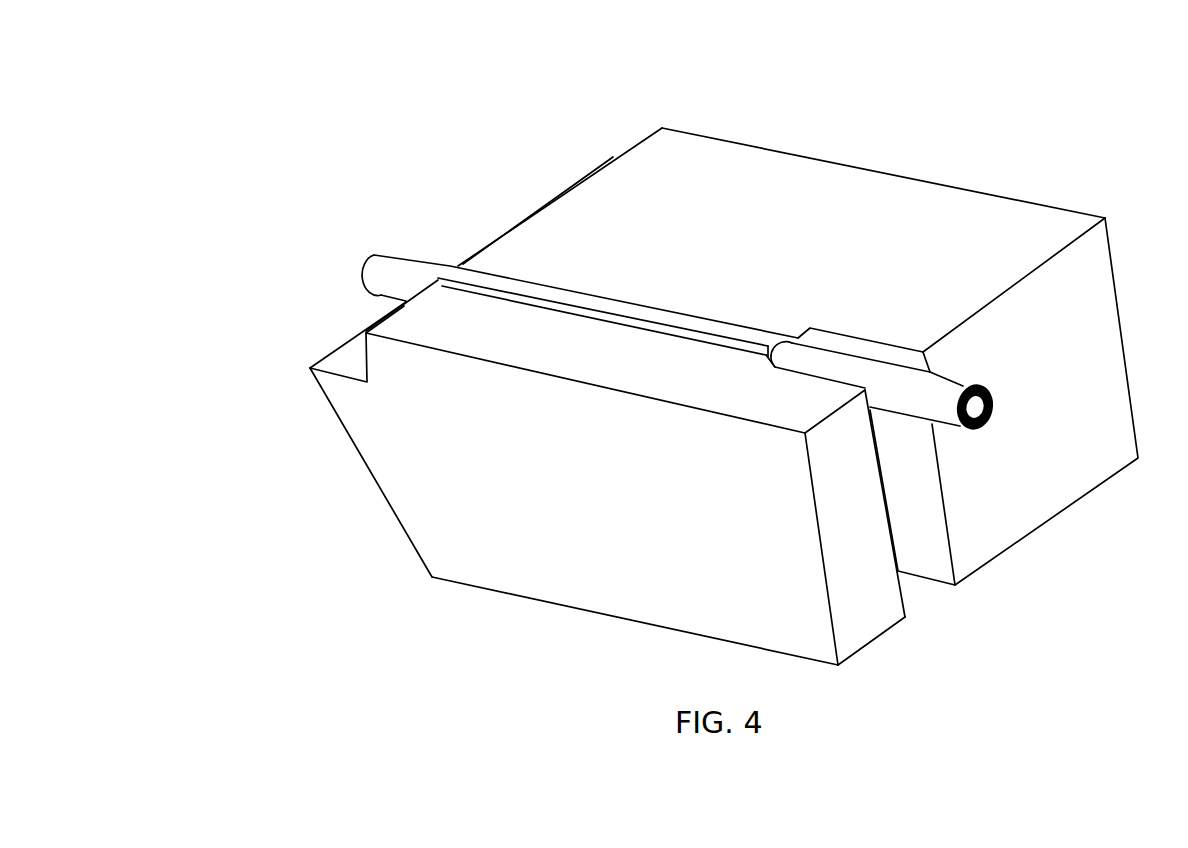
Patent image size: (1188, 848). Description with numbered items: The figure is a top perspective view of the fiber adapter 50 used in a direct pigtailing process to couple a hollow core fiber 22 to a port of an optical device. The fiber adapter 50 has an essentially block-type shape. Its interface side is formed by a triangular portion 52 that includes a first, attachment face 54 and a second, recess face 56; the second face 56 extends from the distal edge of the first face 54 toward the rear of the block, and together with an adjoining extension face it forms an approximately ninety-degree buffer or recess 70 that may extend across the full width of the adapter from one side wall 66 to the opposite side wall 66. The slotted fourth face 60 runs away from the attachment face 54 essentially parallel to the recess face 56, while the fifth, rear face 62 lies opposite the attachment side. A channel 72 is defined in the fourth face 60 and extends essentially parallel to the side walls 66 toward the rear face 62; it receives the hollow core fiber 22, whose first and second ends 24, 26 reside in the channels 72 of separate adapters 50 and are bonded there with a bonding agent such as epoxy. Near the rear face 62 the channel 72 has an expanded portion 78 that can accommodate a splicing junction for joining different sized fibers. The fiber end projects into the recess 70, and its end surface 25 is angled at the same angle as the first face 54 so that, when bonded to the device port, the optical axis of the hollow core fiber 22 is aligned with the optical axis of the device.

The fiber adapter 50 is at (527, 64).
The hollow core fiber 22 is at (535, 274).
The first end 24 is at (535, 274).
The second end 26 is at (432, 267).
The end surface 25 is at (363, 280).
The triangular portion 52 is at (352, 418).
The first face 54 is at (378, 494).
The second face 56 is at (336, 360).
The fourth face 60 is at (745, 168).
The fifth face 62 is at (1075, 465).
The side walls 66 is at (606, 598).
The recess 70 is at (351, 370).
The channel 72 is at (630, 297).
The expanded portion 78 is at (905, 347).